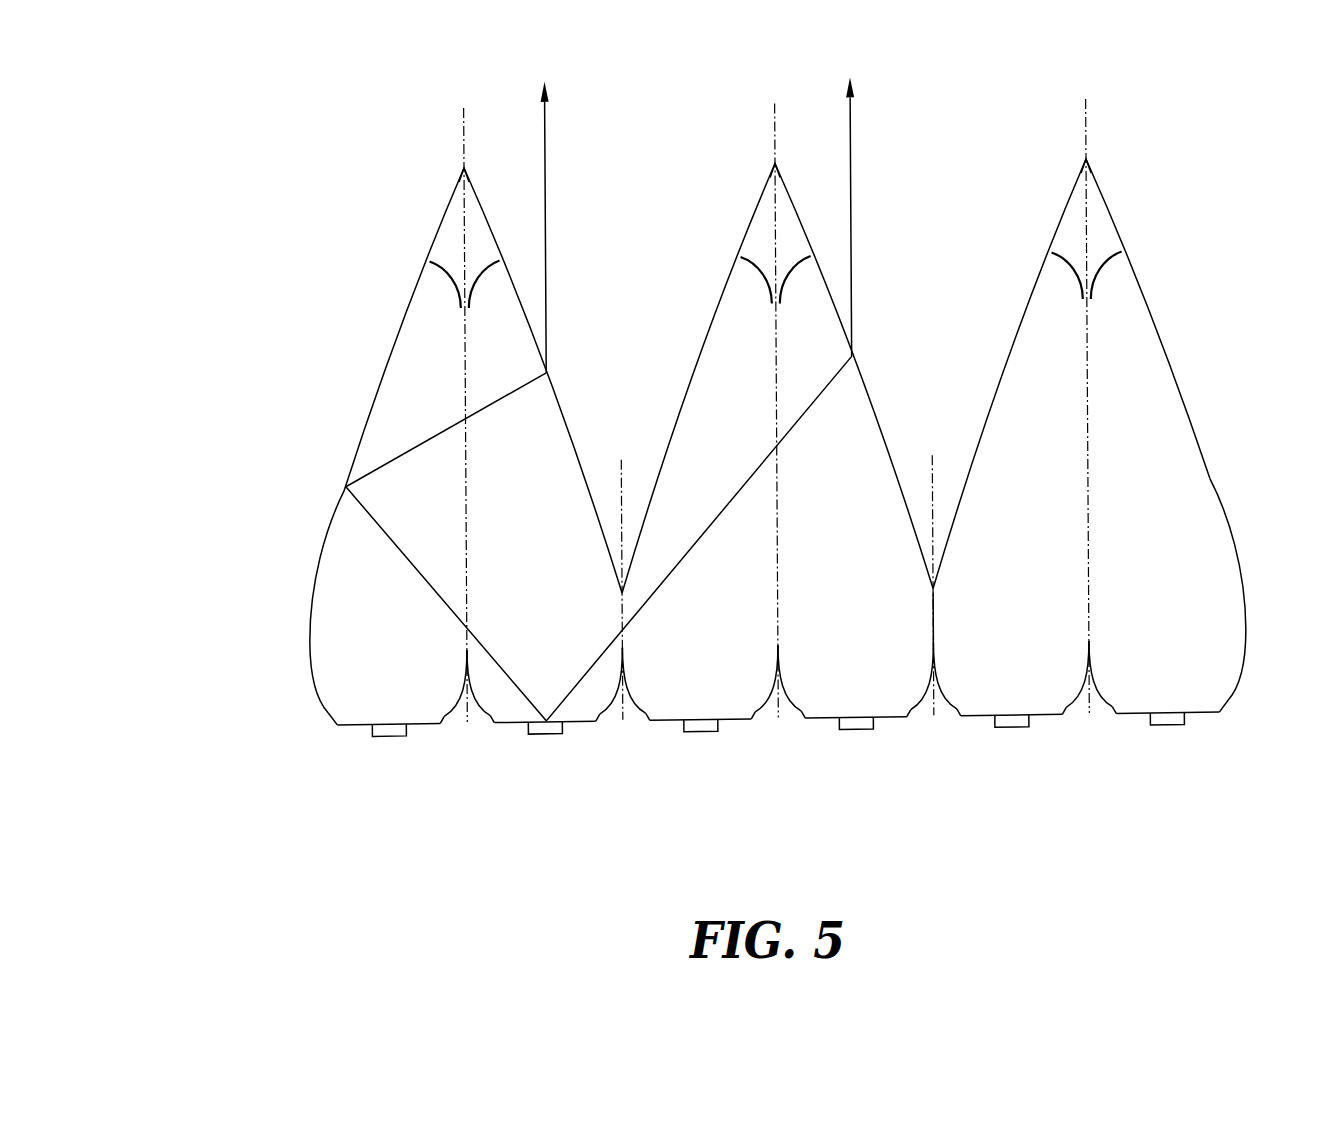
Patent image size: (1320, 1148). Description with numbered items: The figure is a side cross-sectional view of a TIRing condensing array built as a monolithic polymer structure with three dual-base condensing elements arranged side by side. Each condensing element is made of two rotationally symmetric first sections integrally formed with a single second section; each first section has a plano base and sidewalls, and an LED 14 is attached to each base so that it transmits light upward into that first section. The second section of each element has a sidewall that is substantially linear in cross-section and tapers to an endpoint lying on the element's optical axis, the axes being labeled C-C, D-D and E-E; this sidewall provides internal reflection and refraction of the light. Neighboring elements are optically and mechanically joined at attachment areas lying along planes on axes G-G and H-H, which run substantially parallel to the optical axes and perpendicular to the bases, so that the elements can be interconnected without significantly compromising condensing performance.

The LED 14 is at (390, 735).